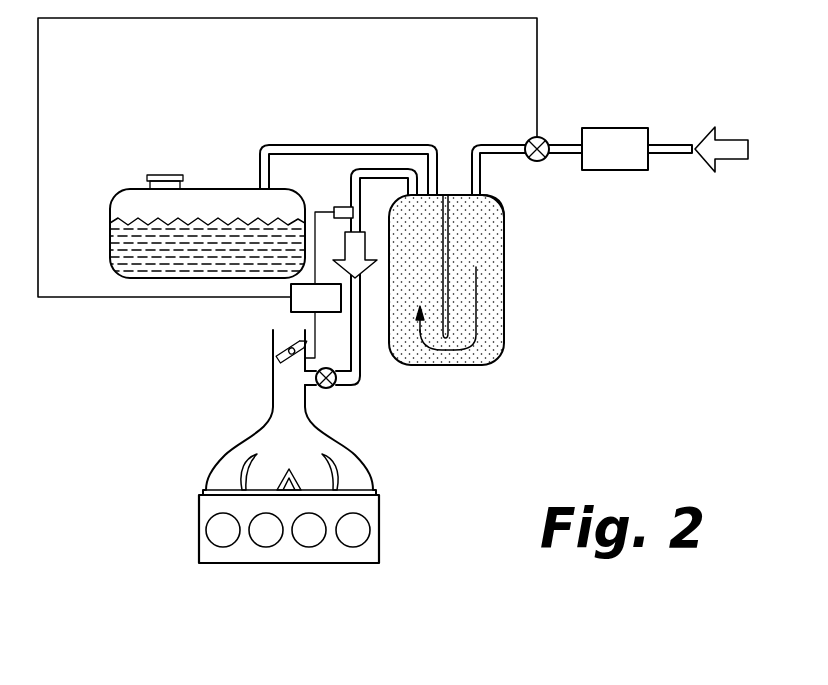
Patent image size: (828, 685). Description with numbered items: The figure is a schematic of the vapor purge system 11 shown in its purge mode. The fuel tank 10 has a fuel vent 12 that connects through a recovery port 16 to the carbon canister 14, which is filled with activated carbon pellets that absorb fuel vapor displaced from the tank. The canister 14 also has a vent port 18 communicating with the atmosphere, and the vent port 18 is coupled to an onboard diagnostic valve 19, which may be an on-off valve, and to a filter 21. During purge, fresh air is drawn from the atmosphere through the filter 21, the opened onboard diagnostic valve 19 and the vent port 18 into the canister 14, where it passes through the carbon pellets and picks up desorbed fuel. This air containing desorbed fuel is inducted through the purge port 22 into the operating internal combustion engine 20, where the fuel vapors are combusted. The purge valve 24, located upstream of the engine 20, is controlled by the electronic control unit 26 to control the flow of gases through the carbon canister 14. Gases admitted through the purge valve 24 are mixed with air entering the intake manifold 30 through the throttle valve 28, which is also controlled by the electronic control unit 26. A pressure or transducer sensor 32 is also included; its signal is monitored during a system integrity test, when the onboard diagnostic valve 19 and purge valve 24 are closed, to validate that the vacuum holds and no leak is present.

The fuel tank 10 is at (221, 218).
The vapor purge system 11 is at (468, 386).
The fuel vent 12 is at (262, 177).
The carbon canister 14 is at (431, 280).
The recovery port 16 is at (440, 170).
The vent port 18 is at (484, 201).
The onboard diagnostic (OBD) valve 19 is at (541, 137).
The internal combustion engine 20 is at (199, 532).
The filter 21 is at (629, 162).
The purge port 22 is at (406, 194).
The purge valve 24 is at (330, 389).
The electronic control unit (ECU) 26 is at (290, 312).
The throttle valve 28 is at (272, 348).
The intake manifold 30 is at (233, 437).
The sensor 32 is at (338, 207).